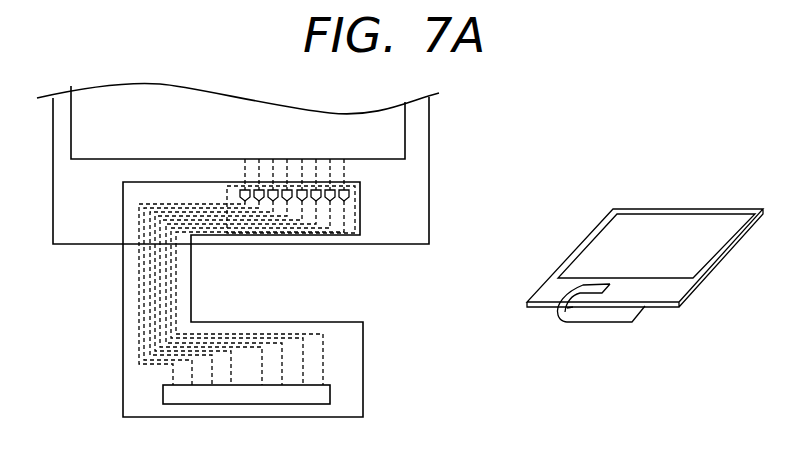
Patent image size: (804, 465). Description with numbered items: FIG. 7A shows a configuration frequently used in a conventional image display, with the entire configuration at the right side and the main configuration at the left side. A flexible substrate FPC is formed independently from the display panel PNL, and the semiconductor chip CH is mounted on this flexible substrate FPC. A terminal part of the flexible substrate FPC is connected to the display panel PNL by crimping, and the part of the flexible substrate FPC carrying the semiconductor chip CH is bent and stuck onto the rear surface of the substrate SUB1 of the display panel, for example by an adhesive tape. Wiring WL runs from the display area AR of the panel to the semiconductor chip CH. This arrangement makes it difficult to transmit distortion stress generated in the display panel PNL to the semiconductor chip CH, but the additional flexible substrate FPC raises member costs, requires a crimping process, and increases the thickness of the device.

The display area AR is at (413, 182).
The substrate SUB1 is at (429, 167).
The flexible substrate FPC is at (364, 340).
The wiring WL is at (148, 300).
The semiconductor chip CH is at (330, 390).
The display panel PNL is at (674, 205).